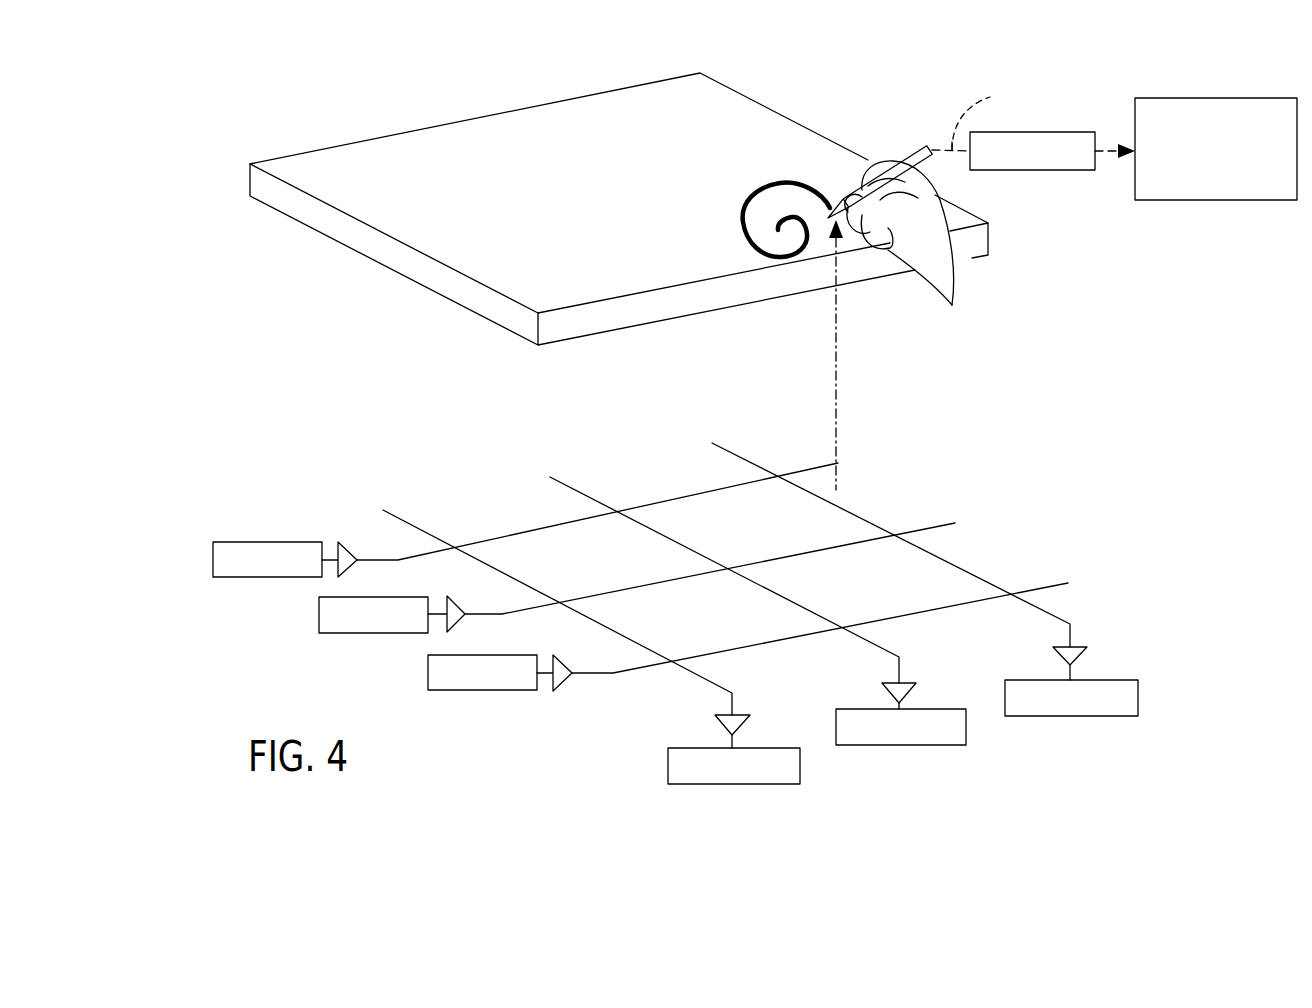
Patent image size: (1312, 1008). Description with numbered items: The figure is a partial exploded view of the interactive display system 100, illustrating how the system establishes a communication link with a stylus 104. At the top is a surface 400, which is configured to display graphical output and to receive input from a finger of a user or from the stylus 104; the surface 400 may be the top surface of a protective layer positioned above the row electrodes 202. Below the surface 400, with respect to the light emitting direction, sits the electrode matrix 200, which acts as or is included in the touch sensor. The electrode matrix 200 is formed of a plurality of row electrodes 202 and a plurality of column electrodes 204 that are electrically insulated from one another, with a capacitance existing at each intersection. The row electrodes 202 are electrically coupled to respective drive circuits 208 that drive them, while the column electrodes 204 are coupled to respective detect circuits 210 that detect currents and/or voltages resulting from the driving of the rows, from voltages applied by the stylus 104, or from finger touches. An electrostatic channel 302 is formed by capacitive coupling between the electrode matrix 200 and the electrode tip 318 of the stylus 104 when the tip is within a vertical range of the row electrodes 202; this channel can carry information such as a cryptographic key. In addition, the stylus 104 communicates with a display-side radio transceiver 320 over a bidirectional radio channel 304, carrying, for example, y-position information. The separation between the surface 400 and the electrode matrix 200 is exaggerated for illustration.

The interactive display system 100 is at (511, 66).
The surface 400 is at (680, 92).
The stylus 104 is at (915, 153).
The electrode tip 318 is at (830, 212).
The bidirectional radio channel 304 is at (1013, 130).
The display-side radio transceiver 320 is at (1232, 188).
The electrostatic channel 302 is at (838, 443).
The electrode matrix 200 is at (165, 648).
The row electrodes 202 is at (1020, 505).
The column electrodes 204 is at (545, 448).
The drive circuits 208 is at (313, 571).
The detect circuits 210 is at (787, 777).